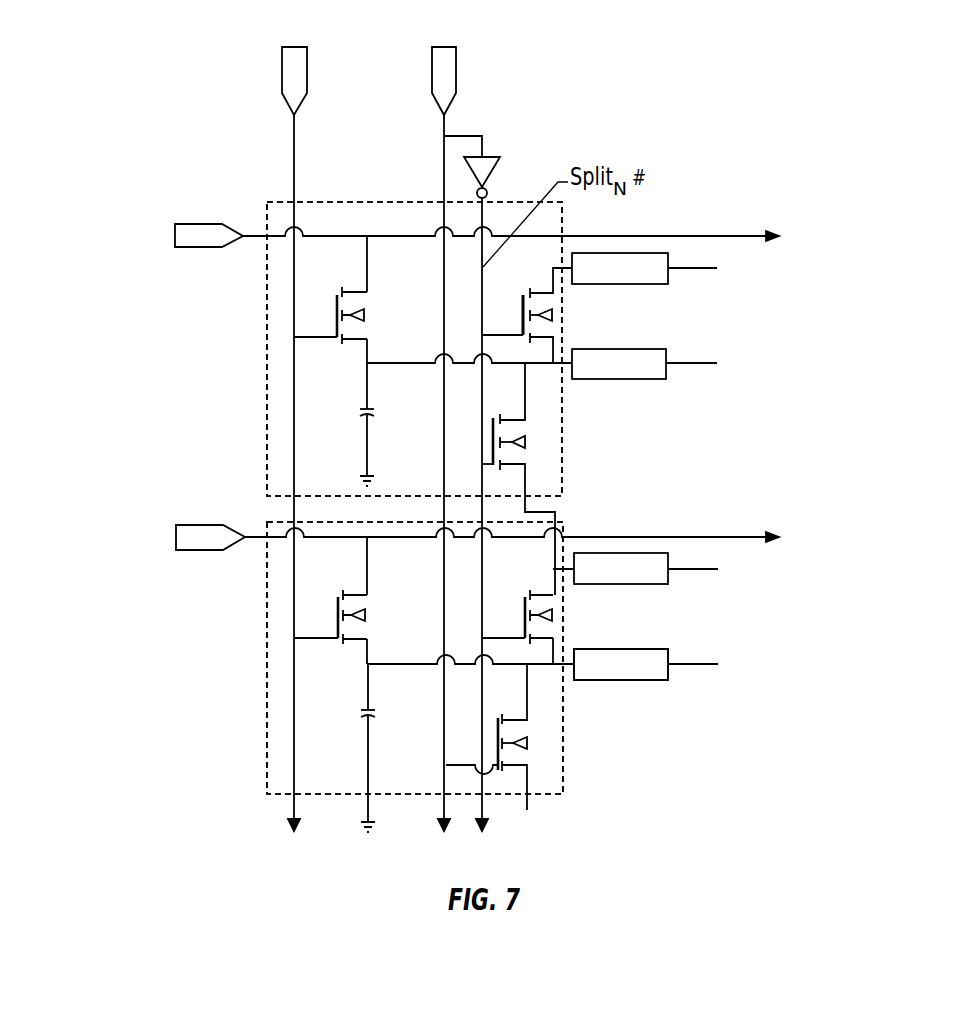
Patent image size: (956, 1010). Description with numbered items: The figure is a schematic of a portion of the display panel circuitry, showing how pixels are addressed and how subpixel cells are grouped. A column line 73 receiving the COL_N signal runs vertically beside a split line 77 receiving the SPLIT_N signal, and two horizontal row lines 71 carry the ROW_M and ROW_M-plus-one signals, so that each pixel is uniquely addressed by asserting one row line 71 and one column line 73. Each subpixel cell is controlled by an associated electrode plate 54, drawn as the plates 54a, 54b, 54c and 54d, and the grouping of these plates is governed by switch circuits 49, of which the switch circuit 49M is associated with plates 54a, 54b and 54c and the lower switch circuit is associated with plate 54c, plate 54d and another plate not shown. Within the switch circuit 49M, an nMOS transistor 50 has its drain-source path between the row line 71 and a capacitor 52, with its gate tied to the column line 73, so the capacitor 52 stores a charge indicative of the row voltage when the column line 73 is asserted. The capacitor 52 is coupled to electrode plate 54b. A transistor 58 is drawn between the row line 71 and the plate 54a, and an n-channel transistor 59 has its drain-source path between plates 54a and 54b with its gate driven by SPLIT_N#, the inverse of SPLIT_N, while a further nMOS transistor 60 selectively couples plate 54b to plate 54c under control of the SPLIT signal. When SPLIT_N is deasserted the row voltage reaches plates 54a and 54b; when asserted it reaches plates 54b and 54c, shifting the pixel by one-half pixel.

The column line 73 is at (293, 126).
The split line 77 is at (443, 126).
The row line 71 is at (257, 235).
The nMOS transistor 50 is at (338, 300).
The capacitor 52 is at (361, 409).
The plate select transistor 58 is at (542, 287).
The n-channel metal-oxide-semiconductor field effect transistor 59 is at (522, 300).
The nMOS transistor 60 is at (493, 441).
The switch circuit 49 is at (562, 420).
The switch circuit 49M is at (562, 456).
The electrode plate 54 is at (593, 649).
The electrode plate 54a is at (613, 253).
The electrode plate 54b is at (617, 349).
The electrode plate 54c is at (618, 553).
The electrode plate 54d is at (597, 649).